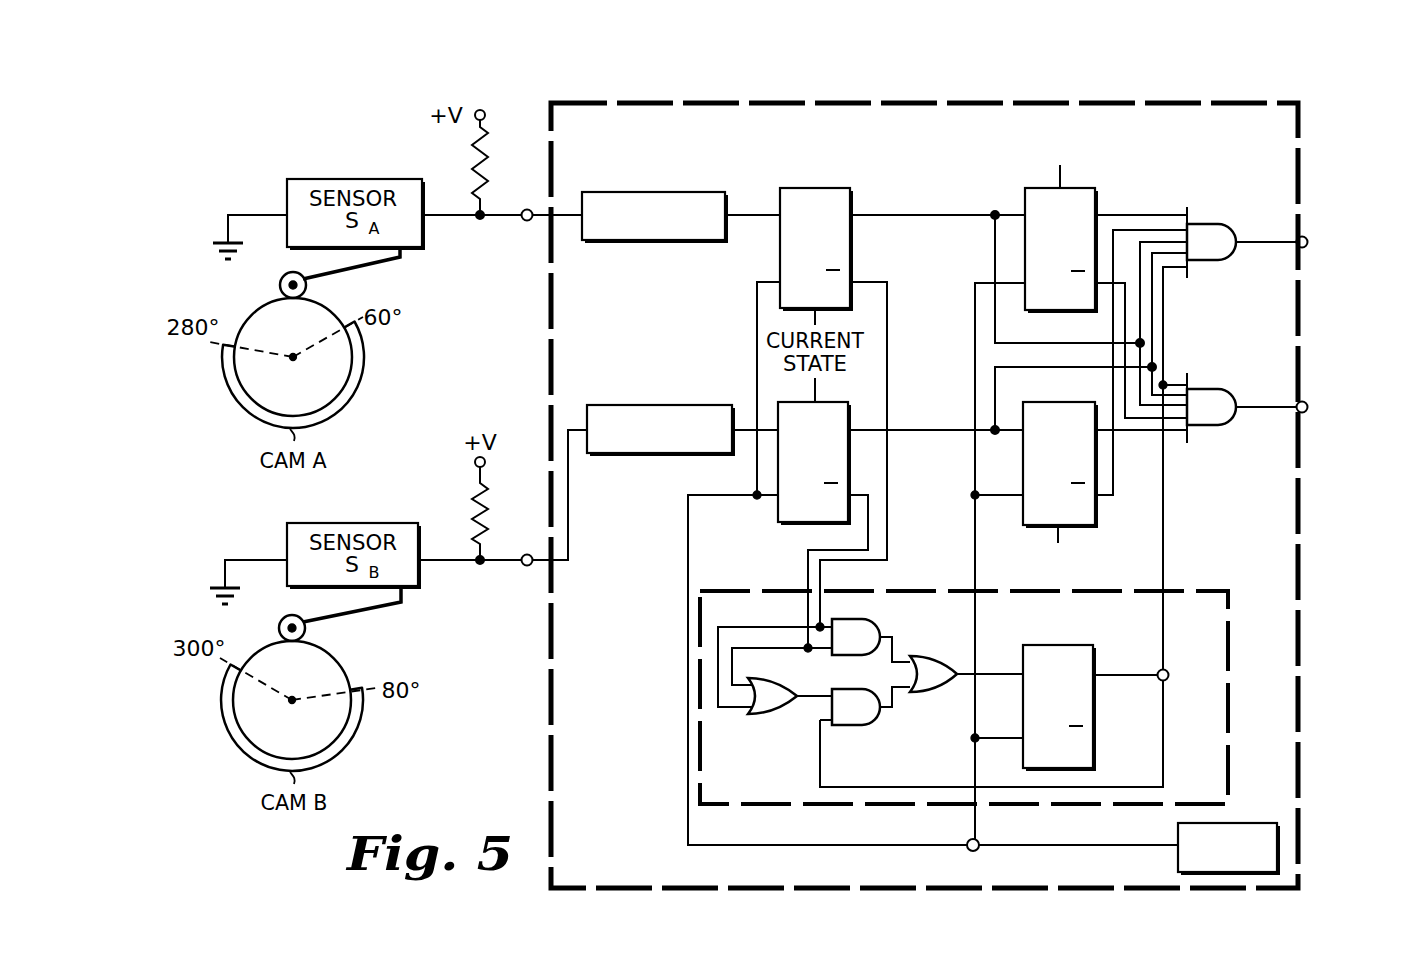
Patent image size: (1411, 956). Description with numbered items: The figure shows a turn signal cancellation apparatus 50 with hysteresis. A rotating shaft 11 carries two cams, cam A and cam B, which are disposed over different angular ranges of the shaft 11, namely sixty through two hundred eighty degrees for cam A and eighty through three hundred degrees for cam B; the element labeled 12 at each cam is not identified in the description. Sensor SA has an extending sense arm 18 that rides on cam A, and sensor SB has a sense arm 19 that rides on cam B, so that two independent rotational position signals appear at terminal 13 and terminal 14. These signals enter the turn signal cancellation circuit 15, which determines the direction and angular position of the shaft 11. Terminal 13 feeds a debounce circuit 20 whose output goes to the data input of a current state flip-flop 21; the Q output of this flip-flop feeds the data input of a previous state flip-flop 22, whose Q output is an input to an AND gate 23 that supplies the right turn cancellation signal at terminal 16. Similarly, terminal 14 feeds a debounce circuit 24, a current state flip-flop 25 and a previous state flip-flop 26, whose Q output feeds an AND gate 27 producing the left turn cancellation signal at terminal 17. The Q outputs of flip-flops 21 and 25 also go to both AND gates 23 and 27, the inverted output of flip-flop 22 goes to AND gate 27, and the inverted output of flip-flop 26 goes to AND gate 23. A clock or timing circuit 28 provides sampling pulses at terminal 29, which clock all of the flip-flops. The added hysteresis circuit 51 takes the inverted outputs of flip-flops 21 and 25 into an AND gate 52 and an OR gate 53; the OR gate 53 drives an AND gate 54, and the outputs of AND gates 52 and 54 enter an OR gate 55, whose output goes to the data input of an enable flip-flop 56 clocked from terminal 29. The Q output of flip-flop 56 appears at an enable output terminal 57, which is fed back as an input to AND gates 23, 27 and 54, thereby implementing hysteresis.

The shaft 11 is at (270, 315).
The cam shaft 12 is at (293, 357).
The terminal 13 is at (524, 220).
The terminal 14 is at (524, 564).
The turn signal cancellation circuit 15 is at (1300, 174).
The terminal 16 is at (1294, 245).
The terminal 17 is at (1294, 410).
The sense arm 18 is at (365, 264).
The sense arm 19 is at (372, 606).
The debounce circuit 20 is at (670, 192).
The current state flip-flop 21 is at (832, 188).
The previous state flip-flop 22 is at (1082, 188).
The AND gate 23 is at (1203, 260).
The debounce circuit 24 is at (675, 405).
The current state flip-flop 25 is at (830, 402).
The previous state flip-flop 26 is at (1045, 402).
The AND gate 27 is at (1208, 389).
The clock or timing circuit 28 is at (1236, 823).
The terminal 29 is at (971, 839).
The turn signal cancellation apparatus 50 is at (477, 347).
The hysteresis circuit 51 is at (1205, 591).
The AND gate 52 is at (862, 619).
The OR gate 53 is at (765, 714).
The AND gate 54 is at (855, 725).
The OR gate 55 is at (925, 691).
The enable flip-flop 56 is at (1072, 645).
The enable output terminal 57 is at (1169, 672).